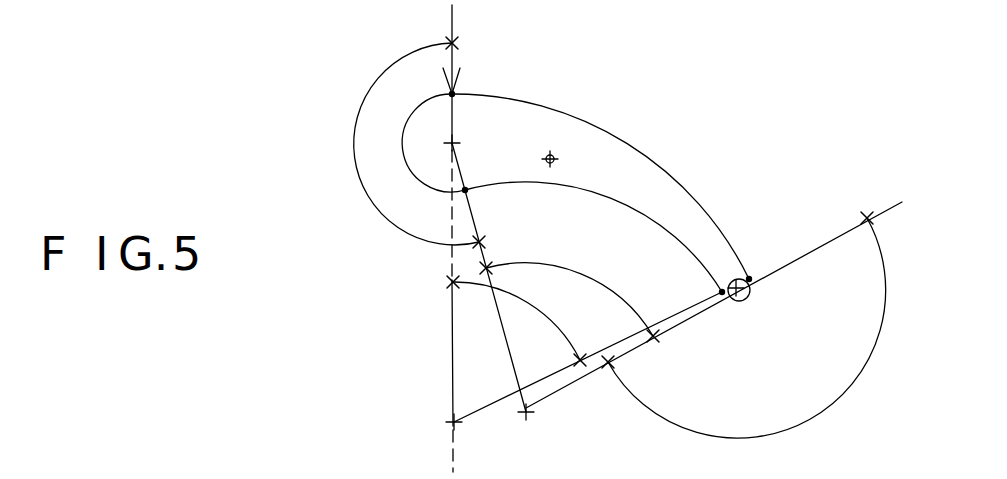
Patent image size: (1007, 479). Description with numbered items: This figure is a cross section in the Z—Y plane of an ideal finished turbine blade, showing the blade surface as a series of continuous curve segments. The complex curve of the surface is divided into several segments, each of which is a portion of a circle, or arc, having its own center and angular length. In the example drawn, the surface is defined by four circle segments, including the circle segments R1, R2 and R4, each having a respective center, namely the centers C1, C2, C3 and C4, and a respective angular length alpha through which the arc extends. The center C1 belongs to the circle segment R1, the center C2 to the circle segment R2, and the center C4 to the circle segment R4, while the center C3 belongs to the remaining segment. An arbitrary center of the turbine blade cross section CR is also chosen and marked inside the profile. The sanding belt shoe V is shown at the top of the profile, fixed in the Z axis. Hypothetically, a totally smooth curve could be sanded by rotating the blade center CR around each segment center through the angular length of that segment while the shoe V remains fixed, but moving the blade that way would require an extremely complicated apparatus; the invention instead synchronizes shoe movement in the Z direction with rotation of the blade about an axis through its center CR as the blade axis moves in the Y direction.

The sanding belt shoe V is at (466, 82).
The center of circle segment R1 C1 is at (458, 426).
The center of circle segment R2 C2 is at (739, 283).
The center of circle segment R3 C3 is at (532, 413).
The center of circle segment R4 C4 is at (456, 142).
The arbitrary center of the turbine blade cross section CR is at (557, 155).
The circle segment R1 is at (638, 150).
The circle segment R2 is at (750, 286).
The circle segment R4 is at (413, 112).